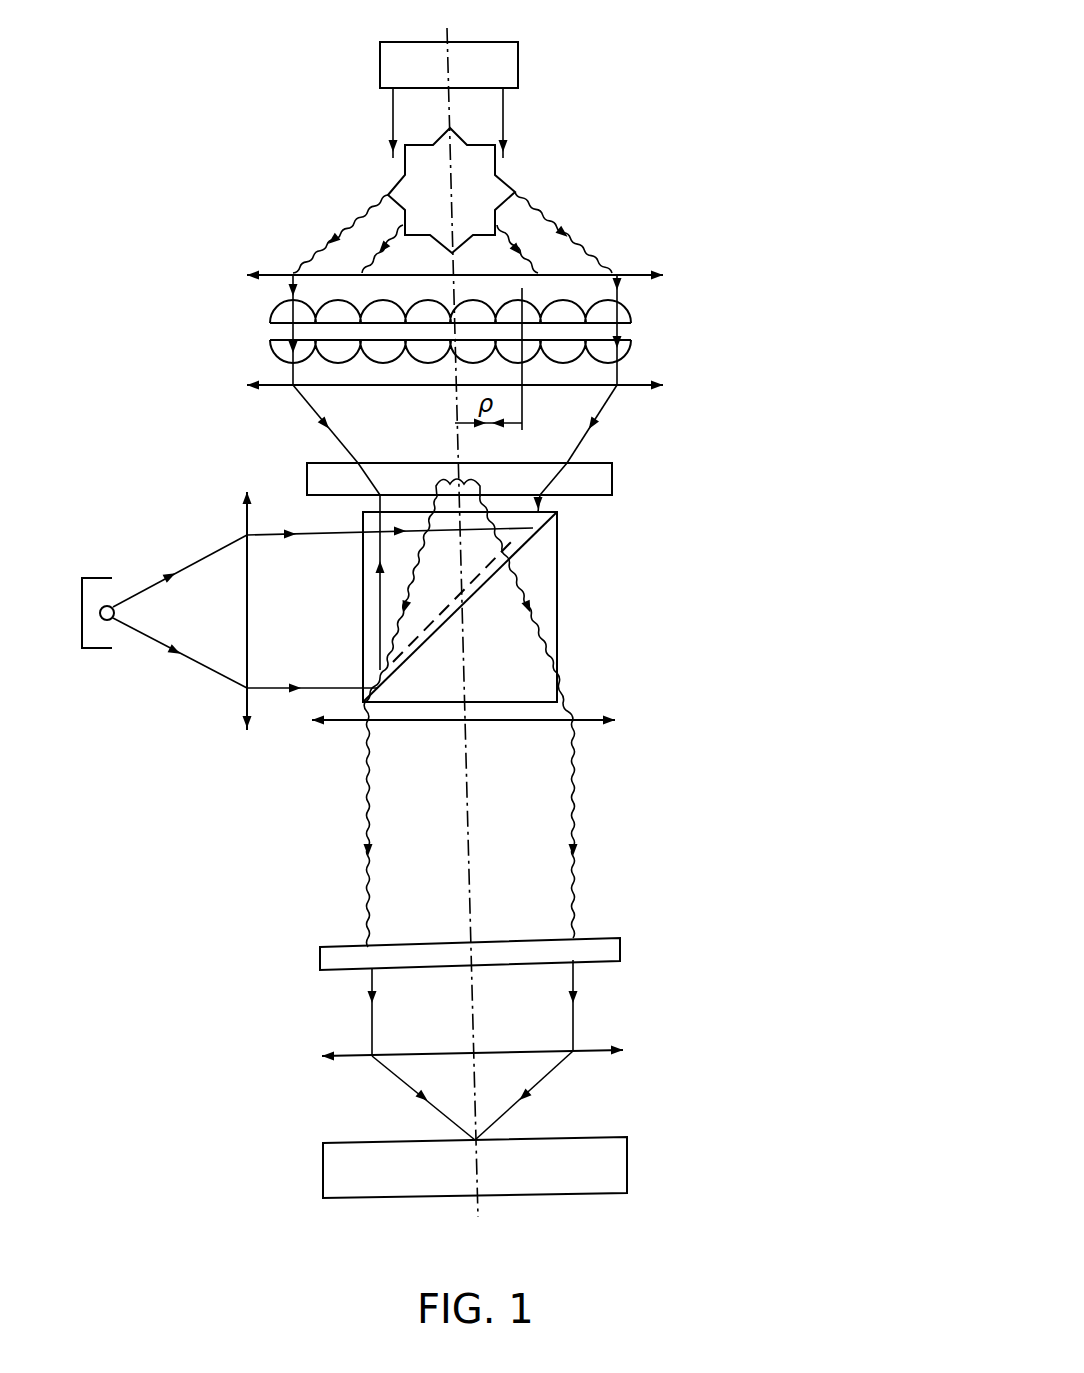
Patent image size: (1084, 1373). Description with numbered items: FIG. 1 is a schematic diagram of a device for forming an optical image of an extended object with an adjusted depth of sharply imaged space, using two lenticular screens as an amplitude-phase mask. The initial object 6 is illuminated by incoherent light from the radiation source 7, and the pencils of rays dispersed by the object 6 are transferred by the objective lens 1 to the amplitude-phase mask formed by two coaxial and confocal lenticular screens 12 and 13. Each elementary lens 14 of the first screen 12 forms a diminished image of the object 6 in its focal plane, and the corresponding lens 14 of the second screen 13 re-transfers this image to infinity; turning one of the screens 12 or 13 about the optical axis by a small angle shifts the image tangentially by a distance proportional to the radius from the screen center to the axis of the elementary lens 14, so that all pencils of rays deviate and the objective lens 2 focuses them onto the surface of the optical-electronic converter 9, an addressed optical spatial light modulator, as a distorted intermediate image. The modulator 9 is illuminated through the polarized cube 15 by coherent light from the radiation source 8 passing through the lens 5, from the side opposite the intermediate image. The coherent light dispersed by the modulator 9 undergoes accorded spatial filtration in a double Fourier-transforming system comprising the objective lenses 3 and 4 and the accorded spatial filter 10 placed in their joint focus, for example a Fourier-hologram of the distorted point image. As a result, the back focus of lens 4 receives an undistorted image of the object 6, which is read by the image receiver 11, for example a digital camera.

The lens 1 is at (565, 272).
The lens 2 is at (570, 388).
The lens 3 is at (530, 723).
The lens 4 is at (530, 1058).
The lens 5 is at (245, 595).
The initial object 6 is at (480, 183).
The radiation source 7 is at (482, 68).
The radiation source 8 is at (103, 597).
The optical-electronic converter 9 is at (595, 476).
The accorded spatial filter 10 is at (602, 952).
The image receiver 11 is at (600, 1168).
The first lenticular screen 12 is at (643, 296).
The second lenticular screen 13 is at (645, 352).
The elementary lens 14 is at (519, 321).
The polarized cube 15 is at (522, 558).